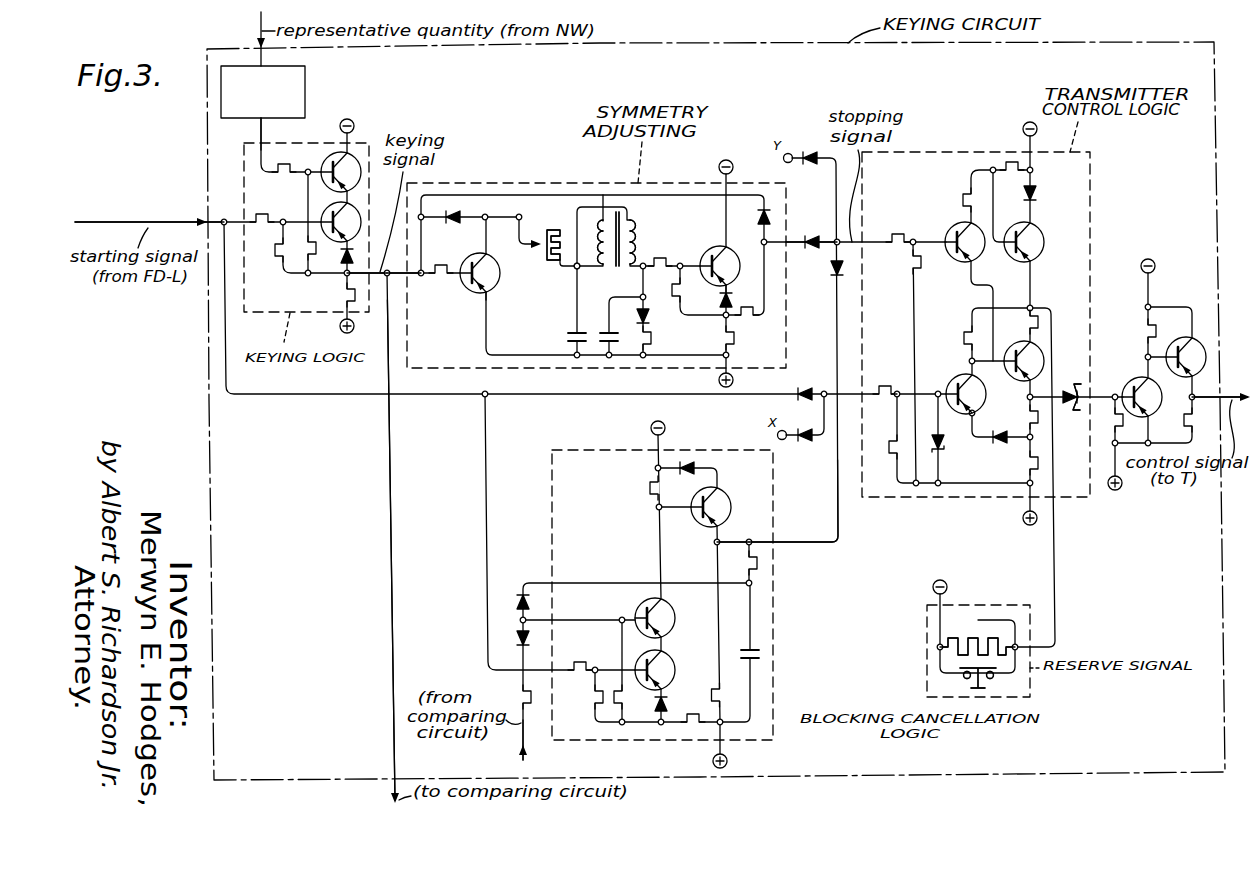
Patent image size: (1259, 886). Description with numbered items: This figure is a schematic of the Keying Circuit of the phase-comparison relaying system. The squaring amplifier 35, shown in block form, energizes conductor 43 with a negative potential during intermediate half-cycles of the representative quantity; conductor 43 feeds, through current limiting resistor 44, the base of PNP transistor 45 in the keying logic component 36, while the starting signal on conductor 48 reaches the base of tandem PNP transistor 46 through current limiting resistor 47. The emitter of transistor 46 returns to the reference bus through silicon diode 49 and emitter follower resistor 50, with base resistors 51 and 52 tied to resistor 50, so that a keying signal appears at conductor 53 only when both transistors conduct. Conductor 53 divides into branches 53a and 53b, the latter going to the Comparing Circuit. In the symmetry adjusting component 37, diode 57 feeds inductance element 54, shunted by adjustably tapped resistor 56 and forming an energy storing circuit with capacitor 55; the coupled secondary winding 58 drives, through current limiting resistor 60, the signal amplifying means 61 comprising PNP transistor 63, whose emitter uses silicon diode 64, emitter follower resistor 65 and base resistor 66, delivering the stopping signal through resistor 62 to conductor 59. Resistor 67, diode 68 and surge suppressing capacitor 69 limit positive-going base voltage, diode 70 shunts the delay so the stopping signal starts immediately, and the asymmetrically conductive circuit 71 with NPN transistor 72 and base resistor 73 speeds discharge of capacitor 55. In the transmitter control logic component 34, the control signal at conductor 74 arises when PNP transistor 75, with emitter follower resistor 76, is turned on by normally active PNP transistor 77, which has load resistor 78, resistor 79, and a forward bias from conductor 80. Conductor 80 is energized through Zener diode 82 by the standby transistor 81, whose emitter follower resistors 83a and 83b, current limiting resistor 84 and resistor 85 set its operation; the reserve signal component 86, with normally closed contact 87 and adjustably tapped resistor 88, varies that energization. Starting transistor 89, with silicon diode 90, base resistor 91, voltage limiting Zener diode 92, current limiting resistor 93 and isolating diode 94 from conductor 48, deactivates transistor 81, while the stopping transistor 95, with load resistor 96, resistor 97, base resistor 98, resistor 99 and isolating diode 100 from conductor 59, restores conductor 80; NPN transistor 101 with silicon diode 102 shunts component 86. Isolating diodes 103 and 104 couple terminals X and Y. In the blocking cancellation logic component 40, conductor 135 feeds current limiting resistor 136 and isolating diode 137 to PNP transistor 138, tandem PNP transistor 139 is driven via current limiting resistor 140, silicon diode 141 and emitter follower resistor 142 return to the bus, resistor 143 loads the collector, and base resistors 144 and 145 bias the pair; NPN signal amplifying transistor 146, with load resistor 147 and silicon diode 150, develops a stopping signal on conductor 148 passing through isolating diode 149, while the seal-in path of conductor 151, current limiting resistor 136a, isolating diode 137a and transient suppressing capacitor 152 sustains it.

The transmitter control logic component 34 is at (1090, 178).
The squaring amplifier 35 is at (306, 75).
The keying logic component 36 is at (330, 143).
The symmetry adjusting component 37 is at (542, 183).
The blocking cancellation logic component 40 is at (776, 737).
The conductor 43 is at (259, 129).
The current limiting resistor 44 is at (283, 166).
The PNP transistor 45 is at (324, 166).
The PNP transistor 46 is at (327, 210).
The current limiting resistor 47 is at (264, 215).
The conductor 48 is at (224, 220).
The silicon diode 49 is at (340, 256).
The emitter follower resistor 50 is at (340, 295).
The base resistor 51 is at (303, 247).
The base resistor 52 is at (278, 257).
The conductor 53 is at (364, 277).
The branch conductor 53a is at (418, 277).
The branch conductor 53b is at (385, 446).
The inductance element 54 is at (581, 270).
The capacitor 55 is at (569, 337).
The adjustably tapped resistor 56 is at (540, 256).
The diode 57 is at (452, 212).
The secondary winding 58 is at (637, 225).
The conductor 59 is at (797, 246).
The current limiting resistor 60 is at (664, 262).
The signal amplifying means 61 is at (720, 246).
The resistor 62 is at (749, 324).
The PNP transistor 63 is at (737, 278).
The silicon diode 64 is at (716, 302).
The emitter follower resistor 65 is at (718, 340).
The base resistor 66 is at (676, 294).
The resistor 67 is at (647, 340).
The diode 68 is at (640, 313).
The surge suppressing capacitor 69 is at (604, 334).
The diode 70 is at (758, 214).
The asymmetrically conductive circuit 71 is at (482, 249).
The NPN transistor 72 is at (495, 287).
The base resistor 73 is at (442, 266).
The conductor 74 is at (1226, 395).
The PNP transistor 75 is at (1198, 345).
The emitter follower resistor 76 is at (1188, 425).
The PNP transistor 77 is at (1160, 389).
The load resistor 78 is at (1140, 332).
The resistor 79 is at (1124, 421).
The conductor 80 is at (1100, 395).
The standby transistor 81 is at (1046, 361).
The Zener diode 82 is at (1075, 408).
The emitter follower resistor 83a is at (1024, 417).
The emitter follower resistor 83b is at (1024, 465).
The current limiting resistor 84 is at (1024, 324).
The resistor 85 is at (964, 340).
The reserve signal component 86 is at (999, 605).
The normally closed contact 87 is at (972, 680).
The adjustably tapped resistor 88 is at (975, 637).
The starting transistor 89 is at (956, 380).
The silicon diode 90 is at (992, 444).
The base resistor 91 is at (890, 453).
The voltage limiting Zener diode 92 is at (945, 452).
The current limiting resistor 93 is at (884, 386).
The isolating diode 94 is at (809, 388).
The stopping transistor 95 is at (955, 226).
The load resistor 96 is at (965, 196).
The resistor 97 is at (1010, 161).
The base resistor 98 is at (910, 266).
The resistor 99 is at (900, 232).
The isolating diode 100 is at (814, 237).
The NPN transistor 101 is at (1041, 229).
The silicon diode 102 is at (1035, 190).
The isolating diode 103 is at (808, 442).
The isolating diode 104 is at (810, 167).
The conductor 135 is at (527, 762).
The current limiting resistor 136 is at (529, 693).
The current limiting resistor 136a is at (760, 562).
The isolating diode 137 is at (518, 646).
The isolating diode 137a is at (518, 597).
The PNP transistor 138 is at (640, 605).
The PNP transistor 139 is at (671, 666).
The current limiting resistor 140 is at (580, 665).
The silicon diode 141 is at (667, 705).
The emitter follower resistor 142 is at (692, 731).
The resistor 143 is at (653, 494).
The base resistor 144 is at (618, 720).
The base resistor 145 is at (591, 700).
The NPN signal amplifying transistor 146 is at (726, 499).
The load resistor 147 is at (728, 690).
The conductor 148 is at (786, 541).
The isolating diode 149 is at (832, 274).
The silicon diode 150 is at (686, 464).
The conductor 151 is at (720, 548).
The transient suppressing capacitor 152 is at (763, 653).